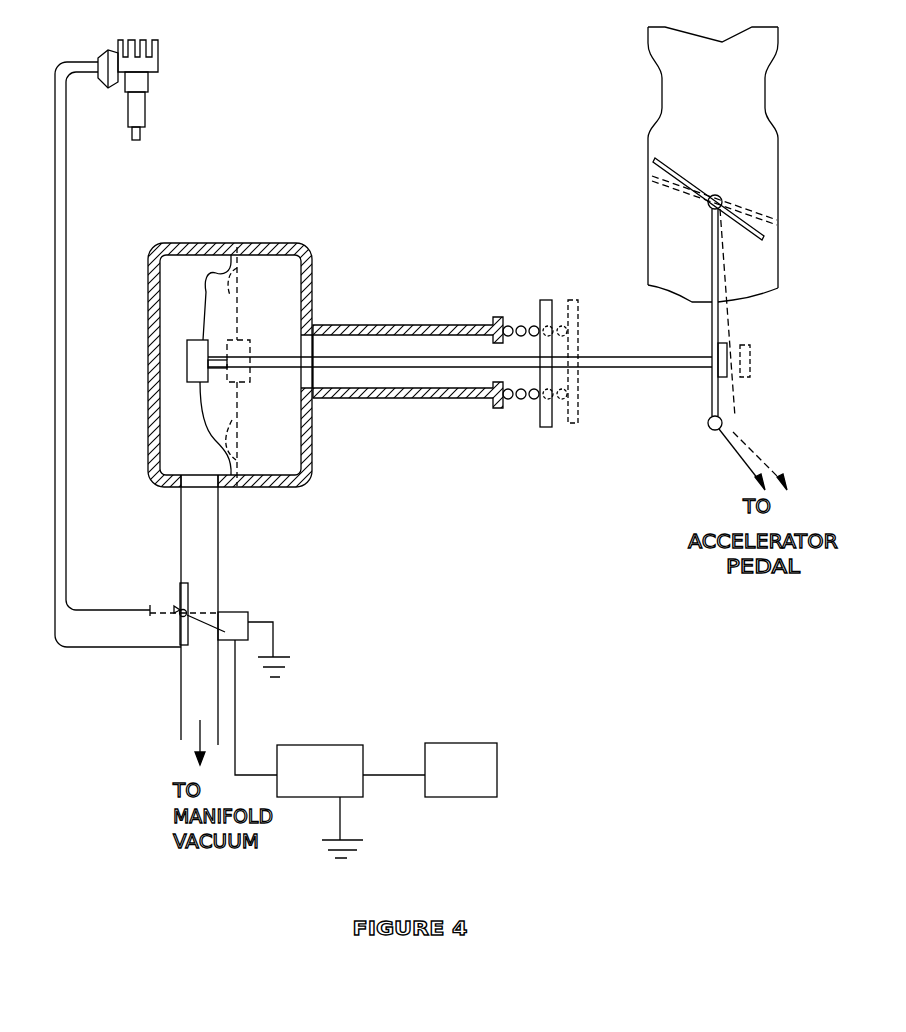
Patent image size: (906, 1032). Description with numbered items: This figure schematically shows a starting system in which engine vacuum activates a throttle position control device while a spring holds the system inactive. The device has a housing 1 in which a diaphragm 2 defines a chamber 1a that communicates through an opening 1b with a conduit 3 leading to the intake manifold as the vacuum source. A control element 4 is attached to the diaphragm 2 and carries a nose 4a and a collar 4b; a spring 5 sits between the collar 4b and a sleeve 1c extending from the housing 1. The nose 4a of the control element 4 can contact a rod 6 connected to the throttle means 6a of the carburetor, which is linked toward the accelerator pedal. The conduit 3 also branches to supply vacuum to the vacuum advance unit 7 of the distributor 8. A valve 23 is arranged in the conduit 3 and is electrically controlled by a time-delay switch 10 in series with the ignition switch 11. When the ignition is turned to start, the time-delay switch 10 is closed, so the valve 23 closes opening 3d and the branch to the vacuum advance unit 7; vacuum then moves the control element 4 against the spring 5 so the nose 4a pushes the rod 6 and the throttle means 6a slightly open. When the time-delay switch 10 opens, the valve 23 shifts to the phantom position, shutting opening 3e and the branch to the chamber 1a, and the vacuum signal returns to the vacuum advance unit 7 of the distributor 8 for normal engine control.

The housing 1 is at (273, 243).
The chamber 1a is at (177, 270).
The opening 1b is at (200, 484).
The sleeve 1c is at (432, 400).
The diaphragm 2 is at (209, 262).
The conduit 3 is at (182, 695).
The opening 3d is at (180, 595).
The opening 3e is at (173, 612).
The control element 4 is at (362, 357).
The nose 4a is at (722, 345).
The collar 4b is at (548, 300).
The spring 5 is at (403, 325).
The rod 6 is at (710, 393).
The throttle means 6a is at (763, 237).
The vacuum advance unit 7 is at (105, 55).
The distributor 8 is at (157, 43).
The time-delay switch 10 is at (355, 797).
The ignition switch 11 is at (452, 743).
The valve 23 is at (234, 612).